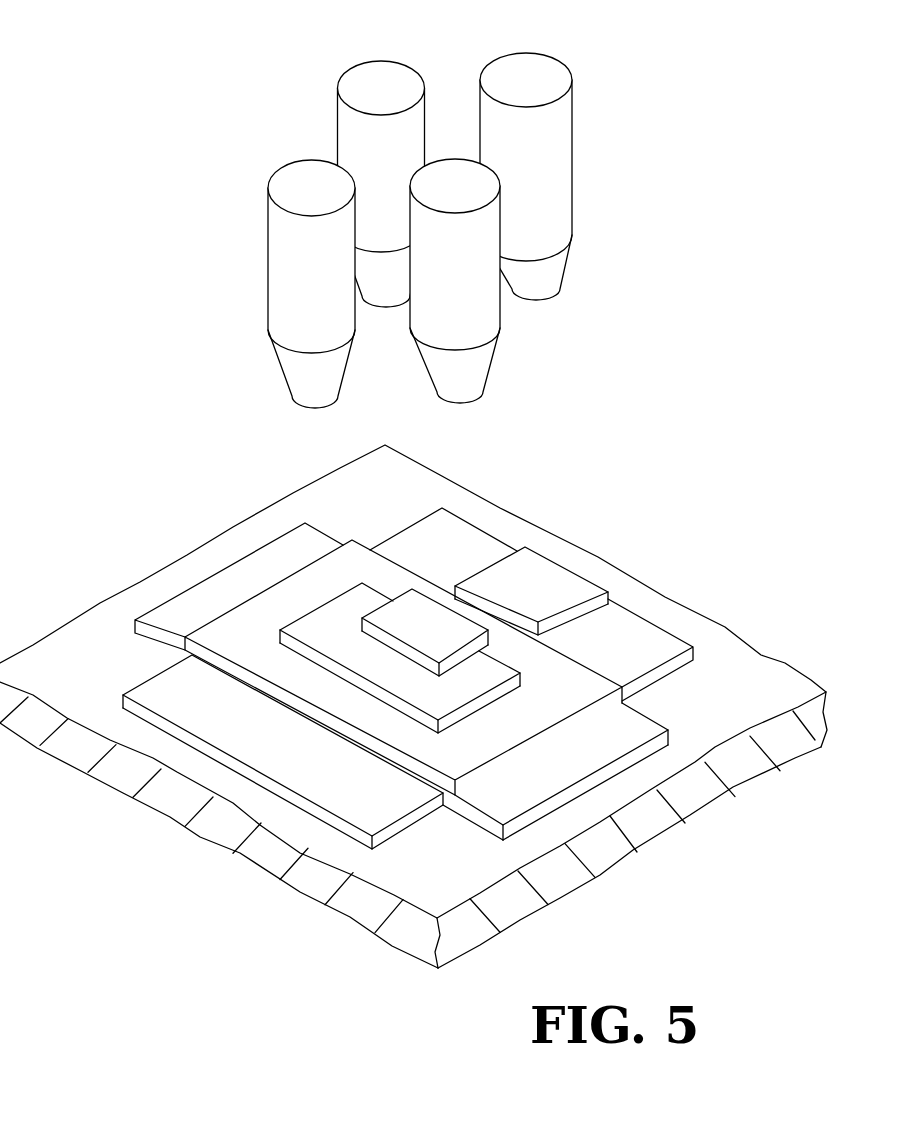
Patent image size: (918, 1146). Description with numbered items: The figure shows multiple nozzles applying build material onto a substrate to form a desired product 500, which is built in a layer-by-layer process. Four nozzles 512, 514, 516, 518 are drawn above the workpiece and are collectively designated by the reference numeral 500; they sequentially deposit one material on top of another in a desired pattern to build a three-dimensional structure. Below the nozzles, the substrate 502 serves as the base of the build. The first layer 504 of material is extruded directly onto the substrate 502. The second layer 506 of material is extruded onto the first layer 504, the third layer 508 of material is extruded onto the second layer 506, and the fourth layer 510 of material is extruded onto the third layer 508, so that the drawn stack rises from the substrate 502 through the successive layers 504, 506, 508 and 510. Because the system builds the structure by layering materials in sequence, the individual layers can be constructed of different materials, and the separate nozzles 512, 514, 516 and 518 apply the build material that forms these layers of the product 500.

The product 500 is at (600, 45).
The substrate 502 is at (765, 677).
The first layer 504 is at (217, 728).
The second layer 506 is at (183, 613).
The third layer 508 is at (328, 625).
The fourth layer 510 is at (548, 583).
The nozzle 512 is at (267, 308).
The nozzle 514 is at (339, 131).
The nozzle 516 is at (573, 167).
The nozzle 518 is at (501, 317).